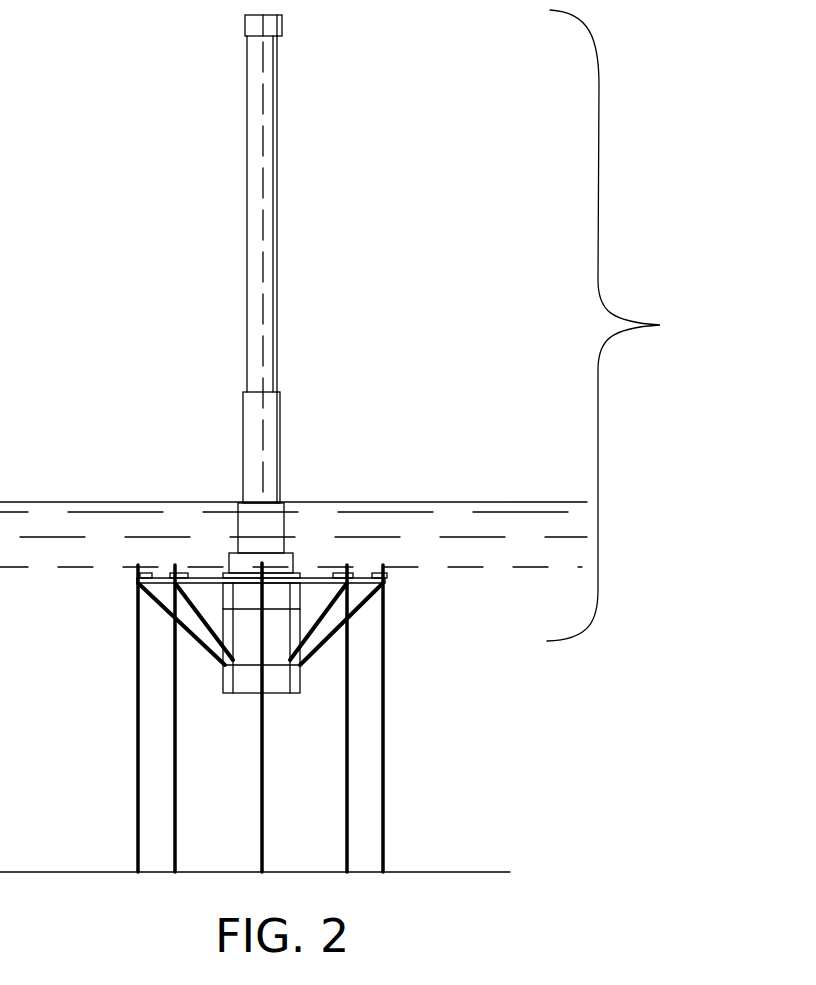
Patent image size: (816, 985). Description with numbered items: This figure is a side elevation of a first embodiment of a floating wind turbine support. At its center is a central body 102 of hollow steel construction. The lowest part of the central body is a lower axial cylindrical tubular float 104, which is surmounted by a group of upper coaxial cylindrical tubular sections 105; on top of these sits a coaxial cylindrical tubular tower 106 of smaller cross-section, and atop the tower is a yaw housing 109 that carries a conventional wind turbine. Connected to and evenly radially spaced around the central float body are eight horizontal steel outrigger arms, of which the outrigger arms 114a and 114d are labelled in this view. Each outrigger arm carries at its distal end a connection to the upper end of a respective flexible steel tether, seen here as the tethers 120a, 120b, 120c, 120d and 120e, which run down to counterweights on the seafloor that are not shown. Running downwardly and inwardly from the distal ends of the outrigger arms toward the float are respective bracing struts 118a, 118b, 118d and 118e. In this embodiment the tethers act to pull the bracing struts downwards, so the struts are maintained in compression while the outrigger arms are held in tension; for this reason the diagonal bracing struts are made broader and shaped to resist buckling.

The central body 102 is at (623, 325).
The lower axial cylindrical tubular float 104 is at (293, 695).
The upper coaxial cylindrical tubular sections 105 is at (229, 558).
The coaxial cylindrical tubular tower 106 is at (268, 97).
The yaw housing 109 is at (245, 25).
The horizontal steel outrigger arm 114a is at (161, 575).
The horizontal steel outrigger arm 114d is at (363, 574).
The bracing strut 118a is at (165, 607).
The bracing strut 118b is at (203, 634).
The bracing strut 118d is at (317, 632).
The bracing strut 118e is at (363, 606).
The flexible steel tether 120a is at (138, 805).
The flexible steel tether 120b is at (175, 752).
The flexible steel tether 120c is at (262, 817).
The flexible steel tether 120d is at (348, 750).
The flexible steel tether 120e is at (383, 801).